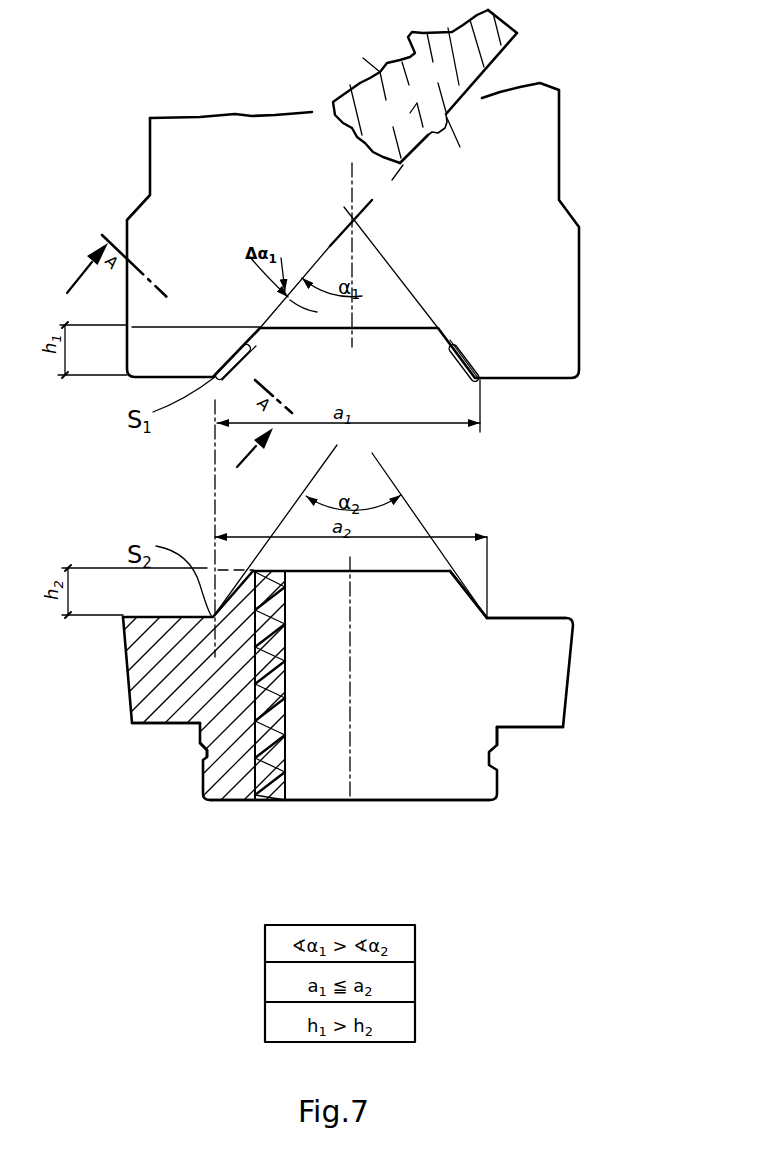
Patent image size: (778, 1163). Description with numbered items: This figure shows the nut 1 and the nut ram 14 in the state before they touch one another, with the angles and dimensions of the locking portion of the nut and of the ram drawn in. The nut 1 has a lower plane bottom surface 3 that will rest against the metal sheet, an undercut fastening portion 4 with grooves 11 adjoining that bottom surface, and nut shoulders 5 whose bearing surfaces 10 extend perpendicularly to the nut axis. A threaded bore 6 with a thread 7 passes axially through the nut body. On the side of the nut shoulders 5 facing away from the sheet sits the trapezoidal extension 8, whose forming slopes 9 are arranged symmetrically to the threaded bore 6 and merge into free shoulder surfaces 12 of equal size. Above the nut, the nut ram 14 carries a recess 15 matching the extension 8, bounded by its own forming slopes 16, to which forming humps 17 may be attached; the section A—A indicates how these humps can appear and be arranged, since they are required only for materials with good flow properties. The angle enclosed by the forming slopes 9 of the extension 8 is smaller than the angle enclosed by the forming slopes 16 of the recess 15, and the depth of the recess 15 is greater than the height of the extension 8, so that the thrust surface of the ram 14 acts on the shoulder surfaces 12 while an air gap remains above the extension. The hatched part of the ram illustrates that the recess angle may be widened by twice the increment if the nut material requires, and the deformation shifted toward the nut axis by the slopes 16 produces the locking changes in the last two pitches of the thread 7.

The nut 1 is at (437, 683).
The bottom surface 3 is at (437, 803).
The undercut fastening portion 4 is at (207, 748).
The nut shoulders 5 is at (170, 682).
The threaded bore 6 is at (287, 681).
The thread 7 is at (260, 710).
The extension 8 is at (440, 585).
The forming slopes 9 is at (462, 590).
The bearing surfaces 10 is at (527, 727).
The grooves 11 is at (203, 758).
The free shoulder surfaces 12 is at (538, 618).
The nut ram 14 is at (512, 222).
The recess 15 is at (293, 337).
The forming slopes 16 is at (216, 374).
The forming humps 17 is at (447, 127).